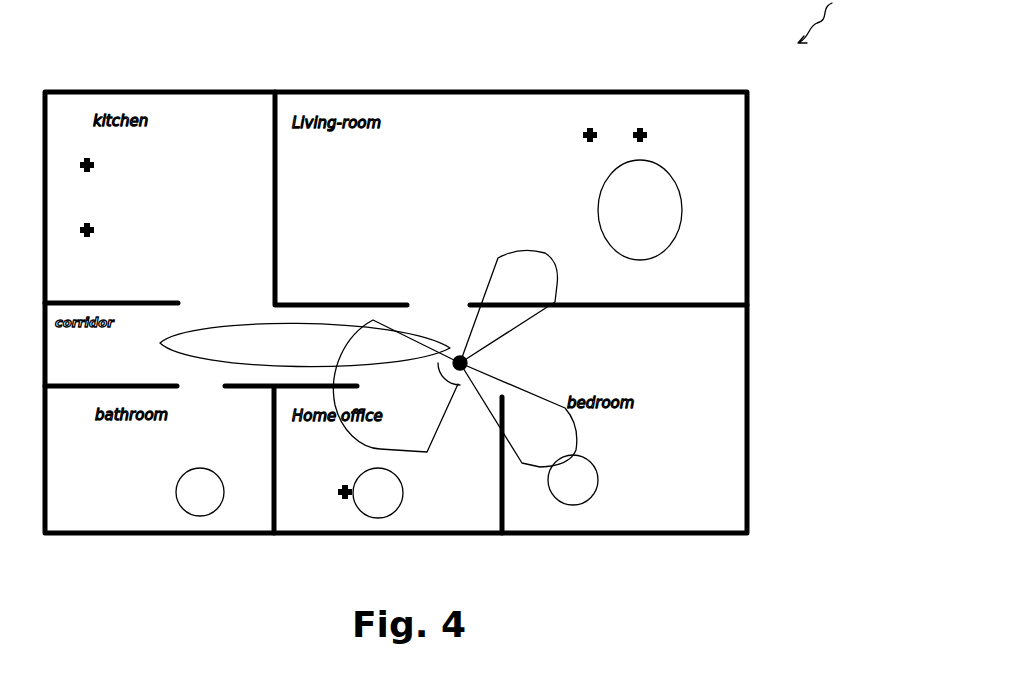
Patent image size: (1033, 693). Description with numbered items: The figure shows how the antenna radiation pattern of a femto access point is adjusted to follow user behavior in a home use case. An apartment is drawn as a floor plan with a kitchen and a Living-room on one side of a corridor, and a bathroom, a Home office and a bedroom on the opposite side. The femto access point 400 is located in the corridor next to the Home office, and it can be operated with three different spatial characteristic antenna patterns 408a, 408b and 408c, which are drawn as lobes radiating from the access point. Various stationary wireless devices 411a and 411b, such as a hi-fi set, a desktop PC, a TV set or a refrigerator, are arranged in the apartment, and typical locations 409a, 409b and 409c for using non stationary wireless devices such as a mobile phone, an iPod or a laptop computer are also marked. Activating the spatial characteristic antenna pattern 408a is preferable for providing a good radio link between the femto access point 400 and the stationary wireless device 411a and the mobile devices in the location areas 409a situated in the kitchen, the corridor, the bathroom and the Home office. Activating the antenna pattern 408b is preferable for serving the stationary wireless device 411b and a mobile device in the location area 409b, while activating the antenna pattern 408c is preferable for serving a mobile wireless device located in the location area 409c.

The femto access point 400 is at (460, 355).
The spatial characteristic antenna pattern 408a is at (438, 430).
The spatial characteristic antenna pattern 408b is at (520, 247).
The spatial characteristic antenna pattern 408c is at (537, 392).
The location area 409a is at (220, 320).
The location area 409b is at (668, 247).
The location area 409c is at (599, 480).
The stationary wireless device 411a is at (100, 222).
The stationary wireless device 411b is at (593, 122).